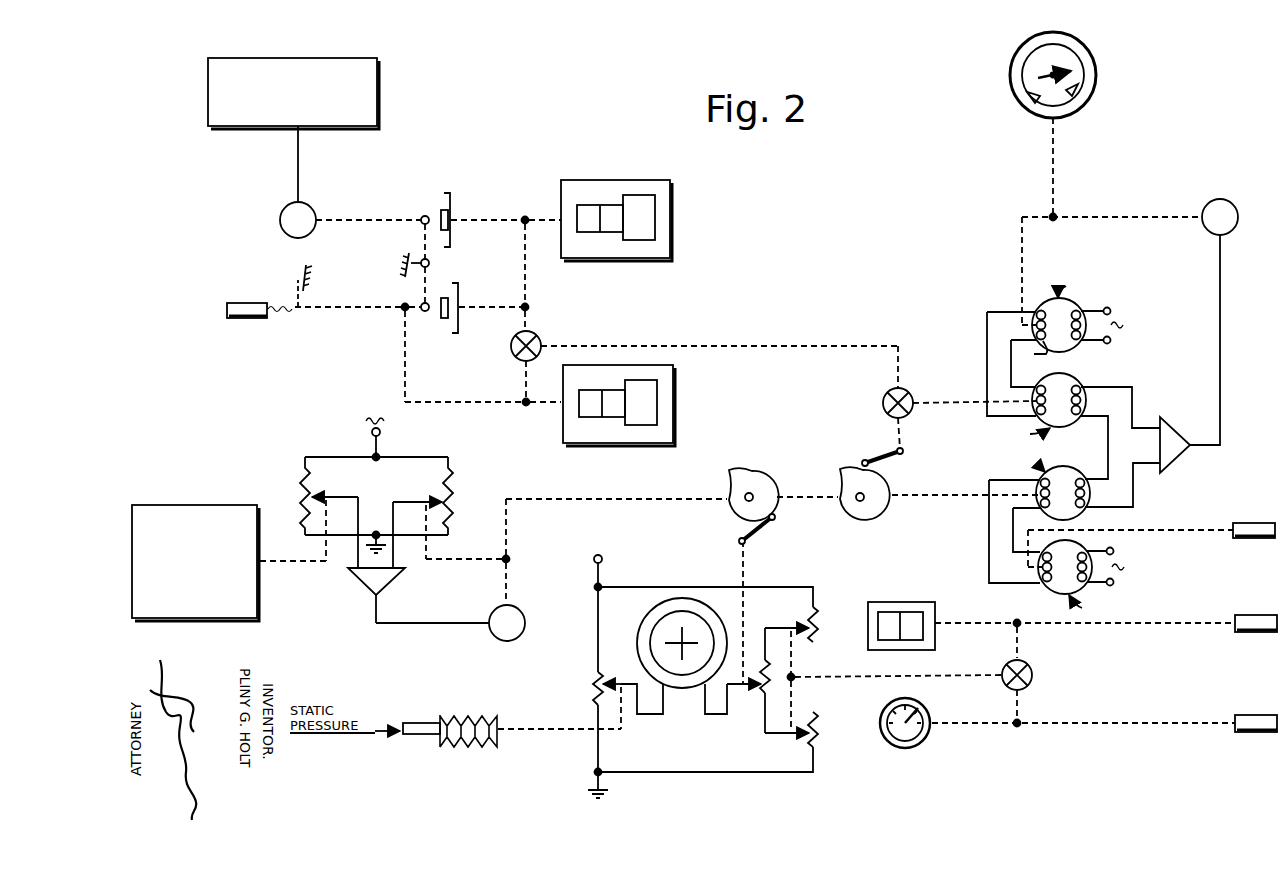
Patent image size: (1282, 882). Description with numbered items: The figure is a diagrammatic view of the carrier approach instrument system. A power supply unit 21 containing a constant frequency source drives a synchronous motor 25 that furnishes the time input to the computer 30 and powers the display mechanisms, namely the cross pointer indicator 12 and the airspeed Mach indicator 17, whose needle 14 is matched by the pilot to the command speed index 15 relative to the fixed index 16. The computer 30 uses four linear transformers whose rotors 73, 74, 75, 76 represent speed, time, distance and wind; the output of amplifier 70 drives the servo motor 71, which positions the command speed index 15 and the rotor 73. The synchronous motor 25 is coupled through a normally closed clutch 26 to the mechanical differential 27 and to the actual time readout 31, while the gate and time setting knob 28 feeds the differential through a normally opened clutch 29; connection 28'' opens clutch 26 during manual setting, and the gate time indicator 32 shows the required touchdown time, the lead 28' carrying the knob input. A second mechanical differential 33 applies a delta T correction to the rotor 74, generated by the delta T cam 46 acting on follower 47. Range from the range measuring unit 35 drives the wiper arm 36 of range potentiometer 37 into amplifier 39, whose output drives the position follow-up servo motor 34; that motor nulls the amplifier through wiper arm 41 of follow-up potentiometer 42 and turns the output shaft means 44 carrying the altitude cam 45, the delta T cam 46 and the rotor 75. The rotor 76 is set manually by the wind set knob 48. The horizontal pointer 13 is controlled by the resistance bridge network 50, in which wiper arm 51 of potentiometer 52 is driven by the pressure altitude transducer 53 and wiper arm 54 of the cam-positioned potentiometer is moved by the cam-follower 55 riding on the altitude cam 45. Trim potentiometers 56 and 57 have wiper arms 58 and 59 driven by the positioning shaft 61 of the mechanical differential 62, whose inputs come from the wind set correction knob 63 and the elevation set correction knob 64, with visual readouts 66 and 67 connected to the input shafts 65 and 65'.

The cross pointer indicator 12 is at (652, 604).
The horizontal pointer 13 is at (667, 640).
The needle 14 is at (1045, 77).
The command speed index 15 is at (1079, 90).
The fixed index 16 is at (1028, 98).
The airspeed Mach indicator 17 is at (1096, 45).
The power supply unit 21 is at (217, 58).
The synchronous motor 25 is at (282, 208).
The normally closed clutch 26 is at (453, 203).
The mechanical differential 27 is at (510, 350).
The gate and time setting knob 28 is at (221, 305).
The lead 28' is at (348, 286).
The connection 28'' is at (395, 263).
The normally opened clutch 29 is at (459, 291).
The computer 30 is at (983, 302).
The actual time readout 31 is at (570, 180).
The gate time indicator 32 is at (673, 403).
The second mechanical differential 33 is at (883, 403).
The position follow-up servo motor 34 is at (520, 611).
The range measuring unit 35 is at (168, 505).
The wiper arm 36 is at (326, 497).
The range potentiometer 37 is at (300, 480).
The amplifier 39 is at (385, 586).
The wiper arm 41 is at (426, 498).
The follow-up potentiometer 42 is at (454, 490).
The output shaft means 44 is at (602, 499).
The altitude cam 45 is at (755, 474).
The delta T cam 46 is at (883, 484).
The follower 47 is at (874, 458).
The wind set knob 48 is at (1246, 523).
The resistance bridge network 50 is at (664, 573).
The wiper arm 51 is at (621, 684).
The potentiometer 52 is at (595, 683).
The pressure altitude transducer 53 is at (468, 715).
The wiper arm 54 is at (760, 685).
The cam-follower 55 is at (761, 531).
The trim potentiometer 56 is at (818, 628).
The trim potentiometer 57 is at (819, 733).
The wiper arm 58 is at (789, 628).
The wiper arm 59 is at (792, 734).
The positioning shaft 61 is at (966, 675).
The mechanical differential 62 is at (1032, 675).
The wind set correction knob 63 is at (1247, 615).
The elevation set correction knob 64 is at (1247, 715).
The input shaft 65 is at (1085, 608).
The input shaft 65' is at (1083, 709).
The visual readout 66 is at (893, 602).
The visual readout 67 is at (920, 749).
The amplifier 70 is at (1171, 431).
The servo motor 71 is at (1235, 204).
The rotor 73 is at (1046, 354).
The rotor 74 is at (1052, 379).
The rotor 75 is at (1056, 480).
The rotor 76 is at (1052, 592).